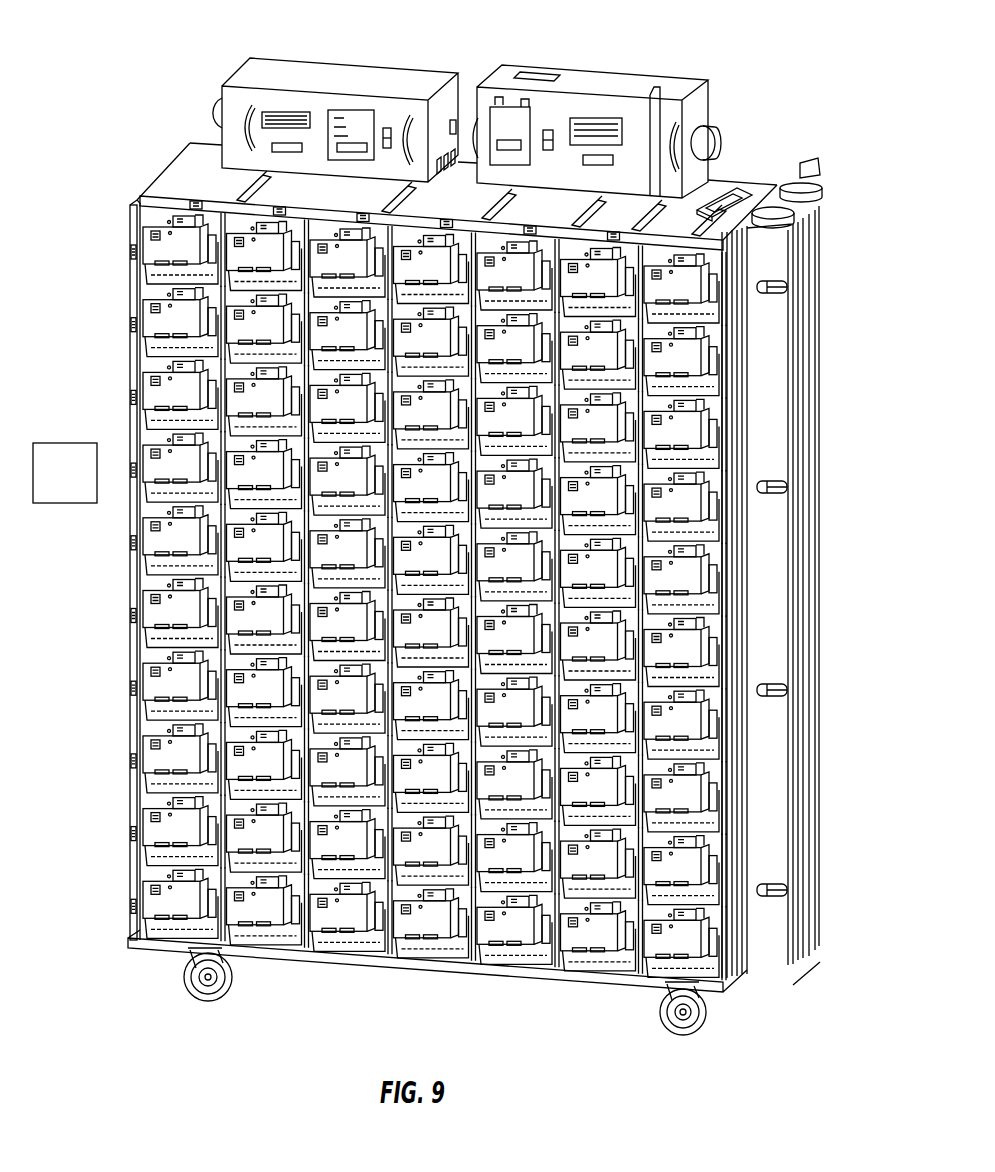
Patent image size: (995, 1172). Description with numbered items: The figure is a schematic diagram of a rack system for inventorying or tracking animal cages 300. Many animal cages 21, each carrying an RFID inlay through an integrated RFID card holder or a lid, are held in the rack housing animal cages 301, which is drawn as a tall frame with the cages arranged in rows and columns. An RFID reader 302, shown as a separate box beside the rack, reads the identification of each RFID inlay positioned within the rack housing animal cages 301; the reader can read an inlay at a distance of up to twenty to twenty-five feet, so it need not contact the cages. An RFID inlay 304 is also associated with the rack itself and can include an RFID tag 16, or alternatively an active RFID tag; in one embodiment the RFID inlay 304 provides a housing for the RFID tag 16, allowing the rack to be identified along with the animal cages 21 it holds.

The rack system for inventorying or tracking animal cages 300 is at (210, 37).
The animal cage 21 is at (140, 203).
The RFID reader 302 is at (68, 443).
The RFID inlay 304 is at (715, 194).
The RFID tag 16 is at (733, 190).
The rack housing animal cages 301 is at (748, 177).